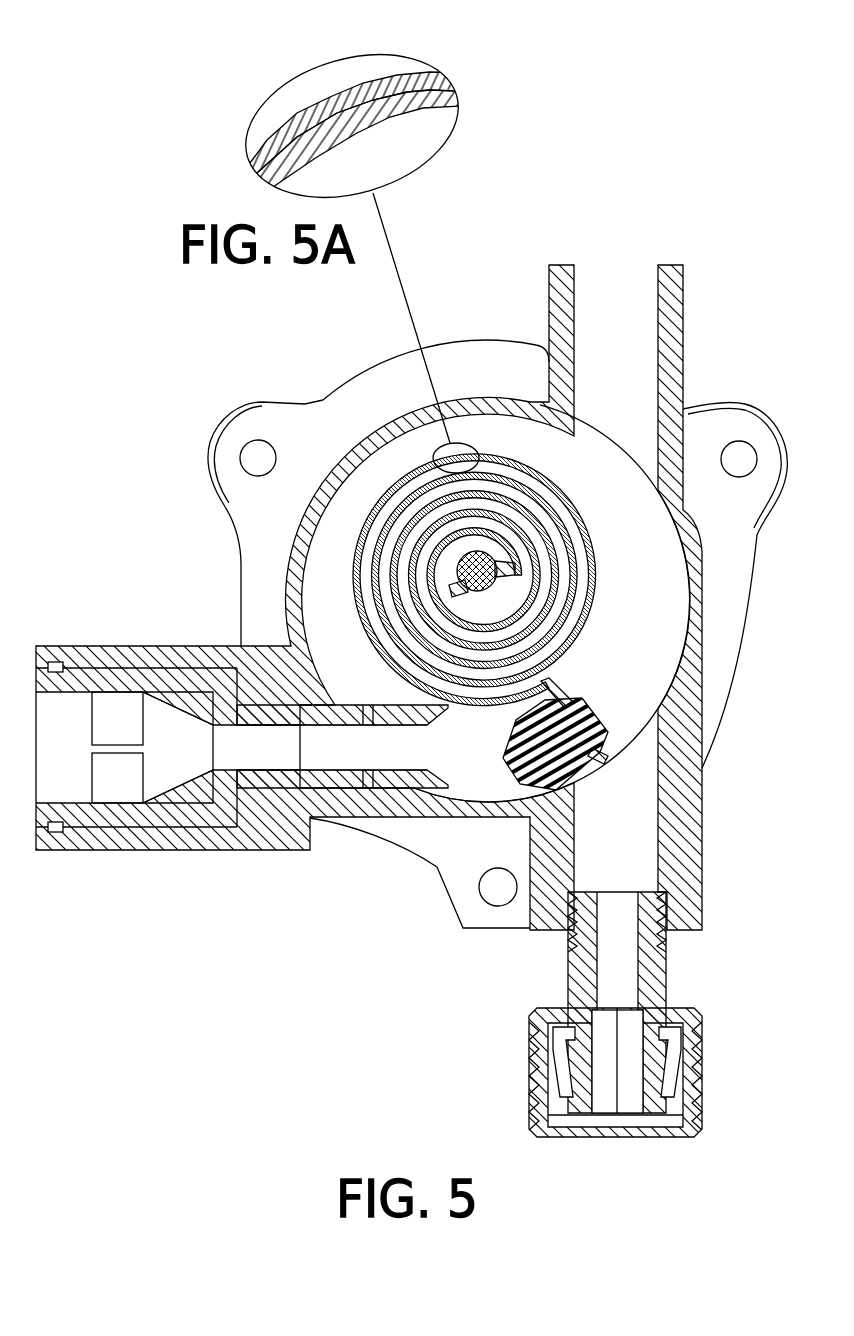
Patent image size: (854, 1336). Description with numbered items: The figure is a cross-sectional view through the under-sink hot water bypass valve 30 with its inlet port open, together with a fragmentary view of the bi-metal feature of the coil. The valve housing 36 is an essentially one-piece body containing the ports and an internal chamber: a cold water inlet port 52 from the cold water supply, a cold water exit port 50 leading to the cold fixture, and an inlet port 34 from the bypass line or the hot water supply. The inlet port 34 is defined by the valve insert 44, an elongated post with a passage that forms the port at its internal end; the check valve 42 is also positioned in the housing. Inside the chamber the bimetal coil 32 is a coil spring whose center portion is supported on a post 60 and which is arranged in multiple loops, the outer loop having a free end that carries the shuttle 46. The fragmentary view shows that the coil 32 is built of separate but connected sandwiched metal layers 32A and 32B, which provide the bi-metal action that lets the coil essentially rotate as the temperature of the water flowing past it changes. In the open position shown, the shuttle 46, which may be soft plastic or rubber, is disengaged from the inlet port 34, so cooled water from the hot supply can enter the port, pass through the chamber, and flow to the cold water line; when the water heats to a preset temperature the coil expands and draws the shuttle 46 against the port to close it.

In FIG. 5, the bypass valve 30 is at (387, 903).
In FIG. 5, the bimetal coil 32 is at (587, 636).
In FIG. 5A, the metal layer 32A is at (377, 88).
In FIG. 5A, the metal layer 32B is at (413, 107).
In FIG. 5, the inlet port 34 is at (328, 744).
In FIG. 5, the valve housing 36 is at (381, 423).
In FIG. 5, the check valve 42 is at (121, 814).
In FIG. 5, the valve insert 44 is at (285, 706).
In FIG. 5, the shuttle 46 is at (518, 768).
In FIG. 5, the cold water exit port 50 is at (707, 1094).
In FIG. 5, the cold water inlet port 52 is at (620, 275).
In FIG. 5, the post 60 is at (488, 583).